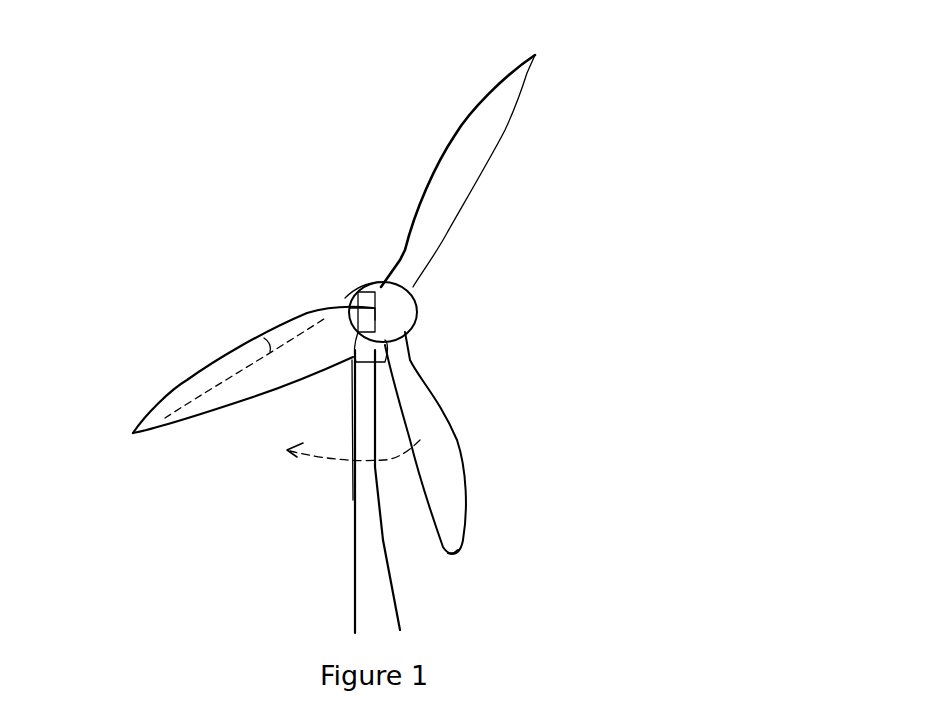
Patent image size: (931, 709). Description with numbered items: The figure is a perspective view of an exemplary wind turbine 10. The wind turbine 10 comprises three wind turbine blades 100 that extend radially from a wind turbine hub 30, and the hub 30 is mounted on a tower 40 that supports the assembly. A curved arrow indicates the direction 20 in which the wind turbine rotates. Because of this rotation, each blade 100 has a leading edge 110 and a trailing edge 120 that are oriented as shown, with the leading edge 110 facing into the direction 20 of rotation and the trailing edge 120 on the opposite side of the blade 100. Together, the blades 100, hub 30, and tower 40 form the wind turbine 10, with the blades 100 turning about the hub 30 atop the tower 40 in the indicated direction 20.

The wind turbine 10 is at (153, 117).
The direction 20 is at (353, 464).
The wind turbine hub 30 is at (400, 320).
The tower 40 is at (365, 582).
The wind turbine blade 100 is at (518, 80).
The leading edge 110 is at (265, 333).
The trailing edge 120 is at (263, 393).